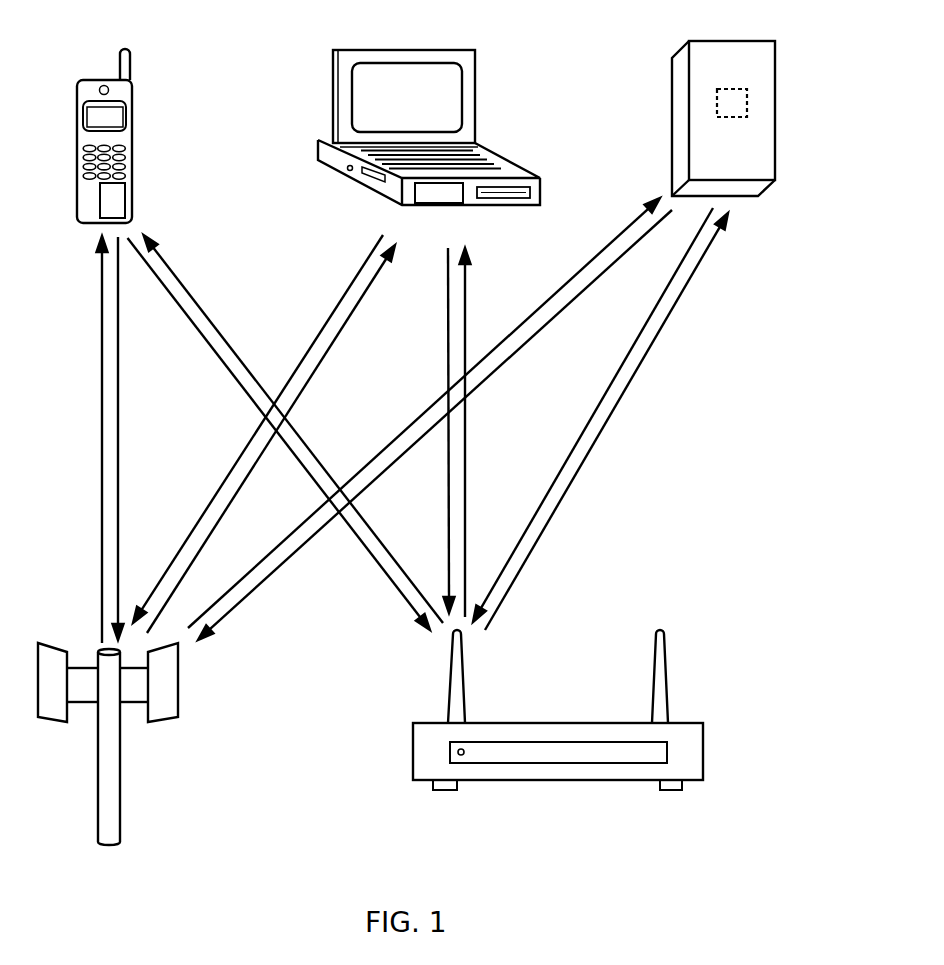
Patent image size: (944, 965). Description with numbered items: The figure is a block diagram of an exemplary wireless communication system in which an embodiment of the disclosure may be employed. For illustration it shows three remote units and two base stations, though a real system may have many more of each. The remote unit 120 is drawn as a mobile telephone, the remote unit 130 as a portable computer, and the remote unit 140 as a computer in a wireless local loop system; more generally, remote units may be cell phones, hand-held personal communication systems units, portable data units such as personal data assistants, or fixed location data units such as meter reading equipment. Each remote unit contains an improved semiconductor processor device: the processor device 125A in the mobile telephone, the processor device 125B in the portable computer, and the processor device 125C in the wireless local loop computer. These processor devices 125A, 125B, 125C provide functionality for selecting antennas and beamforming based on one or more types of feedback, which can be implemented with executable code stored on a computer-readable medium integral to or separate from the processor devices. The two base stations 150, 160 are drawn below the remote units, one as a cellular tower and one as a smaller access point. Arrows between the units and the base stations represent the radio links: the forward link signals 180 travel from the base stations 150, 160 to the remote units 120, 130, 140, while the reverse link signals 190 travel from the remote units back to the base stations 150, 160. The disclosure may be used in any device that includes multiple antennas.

The remote unit 120 is at (103, 80).
The semiconductor processor device 125A is at (113, 205).
The remote unit 130 is at (427, 50).
The semiconductor processor device 125B is at (423, 193).
The remote unit 140 is at (727, 40).
The semiconductor processor device 125C is at (750, 103).
The base station 150 is at (122, 766).
The base station 160 is at (685, 723).
The forward link signals 180 is at (100, 430).
The reverse link signals 190 is at (120, 428).